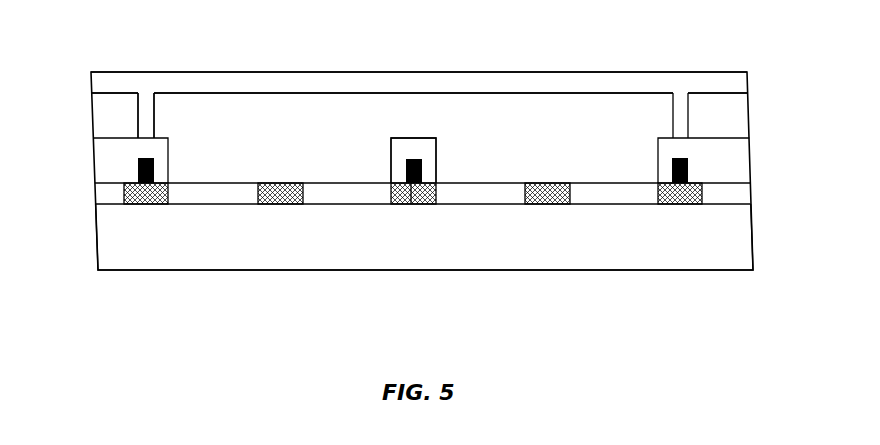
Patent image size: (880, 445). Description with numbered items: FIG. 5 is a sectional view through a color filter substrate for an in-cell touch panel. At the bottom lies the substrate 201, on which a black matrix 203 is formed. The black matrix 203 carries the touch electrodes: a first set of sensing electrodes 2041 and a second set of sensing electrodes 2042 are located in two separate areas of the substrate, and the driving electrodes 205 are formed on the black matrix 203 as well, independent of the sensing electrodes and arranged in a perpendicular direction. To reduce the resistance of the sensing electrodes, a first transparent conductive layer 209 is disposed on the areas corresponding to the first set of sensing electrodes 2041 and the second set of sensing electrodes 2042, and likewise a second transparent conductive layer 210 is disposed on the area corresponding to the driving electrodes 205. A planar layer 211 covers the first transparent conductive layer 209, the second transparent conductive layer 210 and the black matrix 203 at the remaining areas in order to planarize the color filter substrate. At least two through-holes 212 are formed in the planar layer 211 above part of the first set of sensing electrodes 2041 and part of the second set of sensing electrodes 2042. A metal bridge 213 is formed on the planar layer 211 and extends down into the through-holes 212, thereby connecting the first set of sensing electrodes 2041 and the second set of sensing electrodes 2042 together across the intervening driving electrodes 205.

The substrate 201 is at (737, 240).
The black matrix 203 is at (125, 192).
The driving electrodes 205 is at (411, 204).
The first transparent conductive layer 209 is at (738, 145).
The second transparent conductive layer 210 is at (422, 148).
The planar layer 211 is at (735, 115).
The through-holes 212 is at (136, 115).
The metal bridge 213 is at (735, 80).
The first set of sensing electrodes 2041 is at (688, 170).
The second set of sensing electrodes 2042 is at (138, 168).